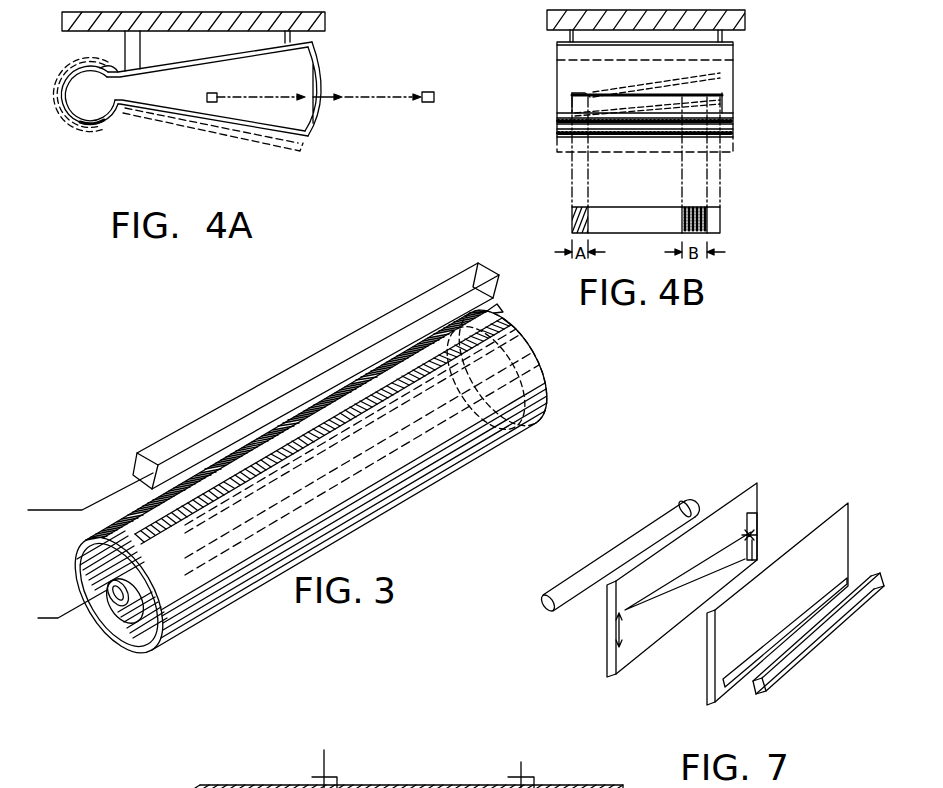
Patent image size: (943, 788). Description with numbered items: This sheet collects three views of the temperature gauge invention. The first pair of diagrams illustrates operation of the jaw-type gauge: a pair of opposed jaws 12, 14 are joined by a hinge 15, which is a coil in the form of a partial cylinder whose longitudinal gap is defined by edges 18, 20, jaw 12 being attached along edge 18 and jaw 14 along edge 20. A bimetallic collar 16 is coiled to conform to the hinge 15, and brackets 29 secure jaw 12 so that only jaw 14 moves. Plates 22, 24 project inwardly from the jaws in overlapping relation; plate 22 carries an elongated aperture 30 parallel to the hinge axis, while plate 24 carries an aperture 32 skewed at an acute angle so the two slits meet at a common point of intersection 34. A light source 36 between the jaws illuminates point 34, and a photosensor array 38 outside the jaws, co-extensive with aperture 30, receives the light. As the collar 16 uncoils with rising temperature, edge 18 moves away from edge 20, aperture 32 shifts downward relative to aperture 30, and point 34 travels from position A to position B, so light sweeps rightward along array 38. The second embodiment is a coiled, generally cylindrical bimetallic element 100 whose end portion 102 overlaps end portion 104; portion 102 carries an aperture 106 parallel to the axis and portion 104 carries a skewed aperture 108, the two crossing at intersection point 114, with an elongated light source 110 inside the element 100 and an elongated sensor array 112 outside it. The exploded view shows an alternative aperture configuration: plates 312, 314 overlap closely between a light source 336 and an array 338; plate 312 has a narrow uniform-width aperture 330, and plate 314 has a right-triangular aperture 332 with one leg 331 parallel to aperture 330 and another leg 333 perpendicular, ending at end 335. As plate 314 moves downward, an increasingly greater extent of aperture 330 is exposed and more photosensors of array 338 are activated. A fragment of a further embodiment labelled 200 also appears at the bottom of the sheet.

In FIG. 4A, the jaw 12 is at (246, 60).
In FIG. 4A, the jaw 14 is at (215, 127).
In FIG. 4A, the hinge 15 is at (56, 97).
In FIG. 4A, the collar 16 is at (62, 73).
In FIG. 4A, the edge 18 is at (120, 72).
In FIG. 4A, the edge 20 is at (118, 106).
In FIG. 4A, the plate 22 is at (320, 62).
In FIG. 4A, the plate 24 is at (312, 128).
In FIG. 4A, the brackets 29 is at (285, 38).
In FIG. 4B, the aperture 30 is at (725, 97).
In FIG. 4B, the aperture 32 is at (720, 82).
In FIG. 4B, the common point of intersection 34 is at (572, 95).
In FIG. 4A, the light source 36 is at (206, 97).
In FIG. 4A, the photosensor array 38 is at (425, 92).
In FIG. 3, the coiled bimetallic element 100 is at (312, 465).
In FIG. 3, the end portion 102 is at (122, 538).
In FIG. 3, the end portion 104 is at (165, 625).
In FIG. 3, the aperture 106 is at (497, 310).
In FIG. 3, the aperture 108 is at (540, 354).
In FIG. 3, the elongated light source 110 is at (107, 603).
In FIG. 3, the elongated sensor array 112 is at (296, 362).
In FIG. 3, the common point of intersection 114 is at (162, 522).
In FIG. 7, the base 200 is at (377, 785).
In FIG. 7, the plate 312 is at (722, 653).
In FIG. 7, the plate 314 is at (732, 493).
In FIG. 7, the aperture 330 is at (735, 685).
In FIG. 7, the leg 331 is at (692, 558).
In FIG. 7, the aperture 332 is at (752, 514).
In FIG. 7, the leg 333 is at (757, 535).
In FIG. 7, the end 335 is at (749, 557).
In FIG. 7, the light source 336 is at (602, 558).
In FIG. 7, the array 338 is at (795, 660).